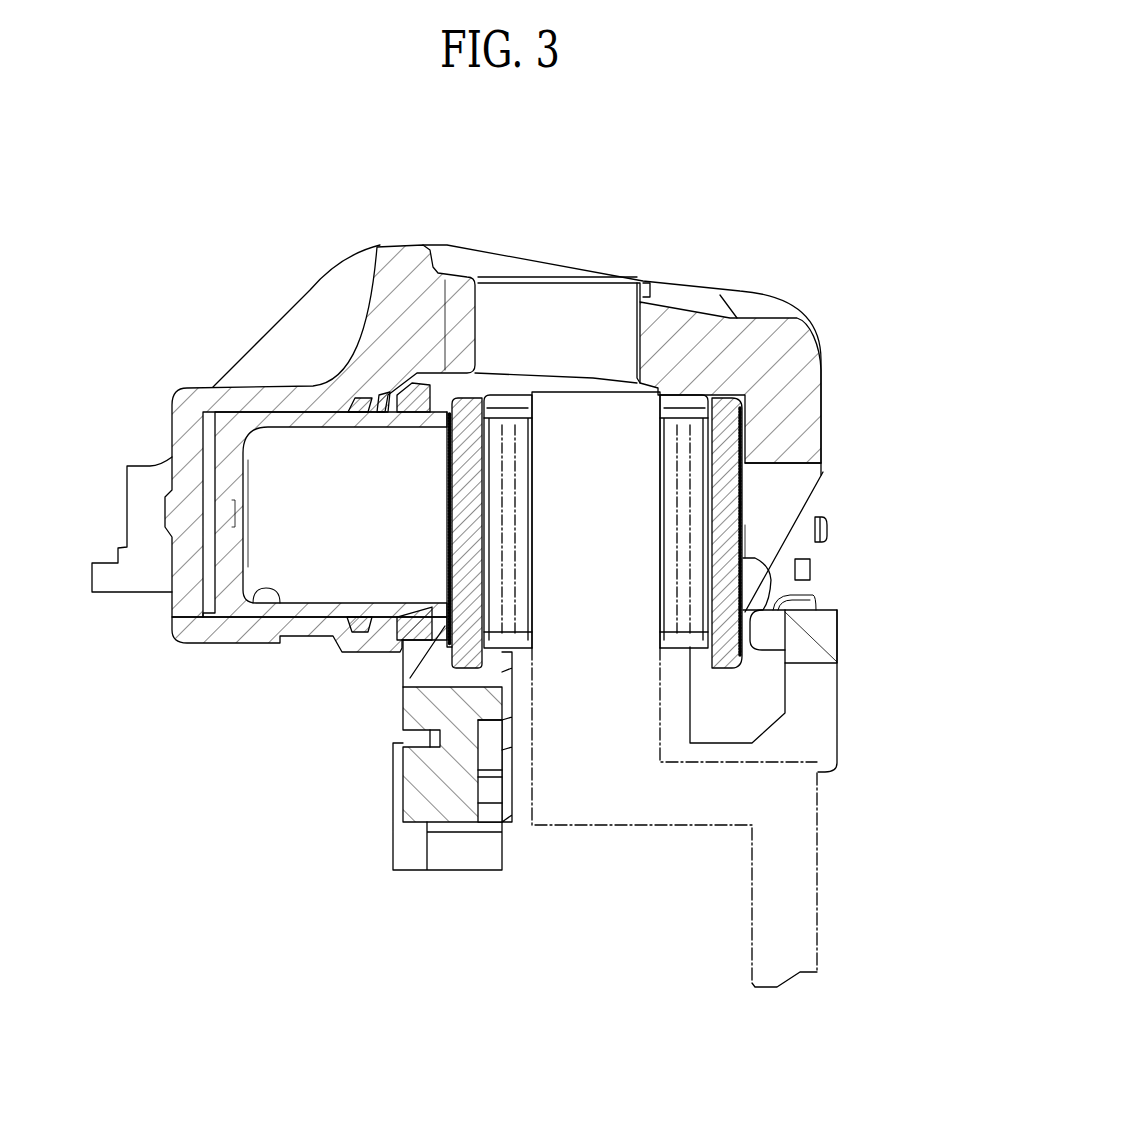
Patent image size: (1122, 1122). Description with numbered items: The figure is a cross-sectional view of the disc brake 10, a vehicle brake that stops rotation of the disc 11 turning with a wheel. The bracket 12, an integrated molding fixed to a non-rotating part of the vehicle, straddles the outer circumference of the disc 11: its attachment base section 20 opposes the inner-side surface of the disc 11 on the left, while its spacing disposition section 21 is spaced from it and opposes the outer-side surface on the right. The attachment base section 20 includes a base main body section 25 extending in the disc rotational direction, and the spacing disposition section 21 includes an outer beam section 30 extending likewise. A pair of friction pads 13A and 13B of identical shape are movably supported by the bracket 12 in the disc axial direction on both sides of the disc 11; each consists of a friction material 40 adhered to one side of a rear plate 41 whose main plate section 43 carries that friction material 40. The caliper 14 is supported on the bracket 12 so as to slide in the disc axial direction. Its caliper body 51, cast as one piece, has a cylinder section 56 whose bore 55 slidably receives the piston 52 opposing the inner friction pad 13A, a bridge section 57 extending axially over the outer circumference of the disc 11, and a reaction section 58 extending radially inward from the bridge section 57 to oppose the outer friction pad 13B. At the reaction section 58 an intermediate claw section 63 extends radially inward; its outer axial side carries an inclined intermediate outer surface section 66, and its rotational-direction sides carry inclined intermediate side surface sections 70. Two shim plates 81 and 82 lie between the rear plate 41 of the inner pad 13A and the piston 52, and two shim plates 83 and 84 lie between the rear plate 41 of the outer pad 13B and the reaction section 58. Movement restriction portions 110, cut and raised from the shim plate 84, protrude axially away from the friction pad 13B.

The disc brake 10 is at (855, 207).
The disc 11 is at (598, 388).
The bracket 12 is at (389, 882).
The friction pad (inner side) 13A is at (506, 402).
The friction pad (outer side) 13B is at (678, 402).
The caliper 14 is at (250, 318).
The attachment base section 20 is at (440, 886).
The spacing disposition section 21 is at (848, 636).
The base main body section 25 is at (405, 788).
The outer beam section 30 is at (810, 655).
The friction material 40 is at (513, 620).
The rear plate 41 is at (460, 670).
The main plate section 43 is at (447, 552).
The caliper body 51 is at (302, 285).
The piston 52 is at (327, 618).
The bore 55 is at (255, 603).
The cylinder section 56 is at (190, 402).
The bridge section 57 is at (555, 300).
The reaction section 58 is at (813, 455).
The intermediate claw section 63 is at (767, 575).
The intermediate outer surface section 66 is at (803, 556).
The intermediate side surface section 70 is at (826, 522).
The shim plate 81 is at (457, 396).
The shim plate 82 is at (447, 512).
The shim plate 83 is at (723, 400).
The shim plate 84 is at (745, 490).
The movement restriction portion 110 is at (770, 595).